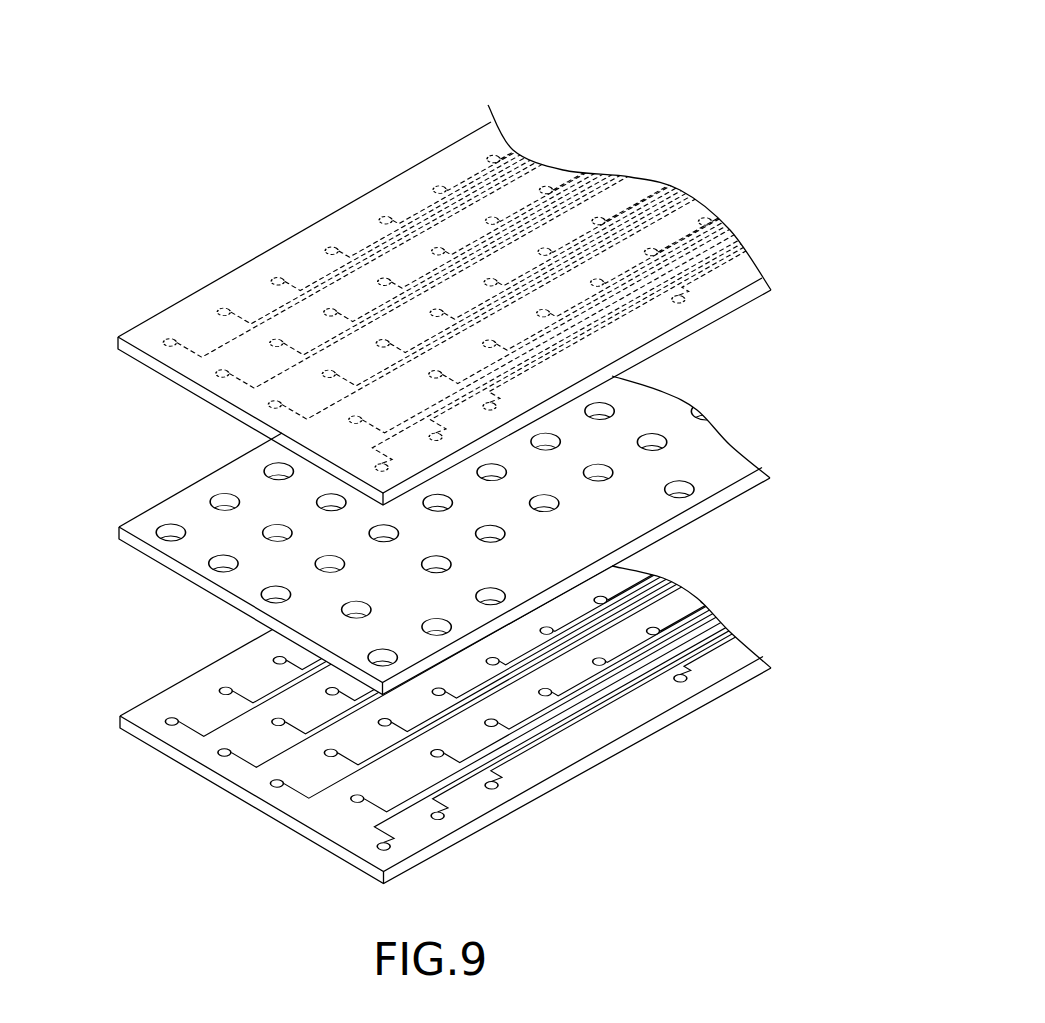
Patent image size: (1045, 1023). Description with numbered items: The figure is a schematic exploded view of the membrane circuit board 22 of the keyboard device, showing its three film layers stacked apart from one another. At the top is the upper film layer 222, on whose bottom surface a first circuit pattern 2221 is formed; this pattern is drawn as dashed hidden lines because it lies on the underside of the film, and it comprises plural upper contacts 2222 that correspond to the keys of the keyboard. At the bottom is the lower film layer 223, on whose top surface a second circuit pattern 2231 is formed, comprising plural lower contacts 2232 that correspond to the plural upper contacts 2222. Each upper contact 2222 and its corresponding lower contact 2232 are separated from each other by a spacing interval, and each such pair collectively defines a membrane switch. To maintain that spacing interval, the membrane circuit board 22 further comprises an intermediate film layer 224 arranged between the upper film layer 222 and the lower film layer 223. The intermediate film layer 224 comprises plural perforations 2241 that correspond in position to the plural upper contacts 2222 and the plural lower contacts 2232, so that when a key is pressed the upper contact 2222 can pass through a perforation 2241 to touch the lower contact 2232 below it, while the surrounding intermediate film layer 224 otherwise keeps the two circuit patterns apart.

The membrane circuit board 22 is at (646, 42).
The upper film layer 222 is at (148, 226).
The first circuit pattern 2221 is at (299, 262).
The upper contacts 2222 is at (434, 183).
The intermediate film layer 224 is at (727, 452).
The perforations 2241 is at (652, 432).
The lower film layer 223 is at (188, 789).
The second circuit pattern 2231 is at (320, 813).
The lower contacts 2232 is at (276, 714).